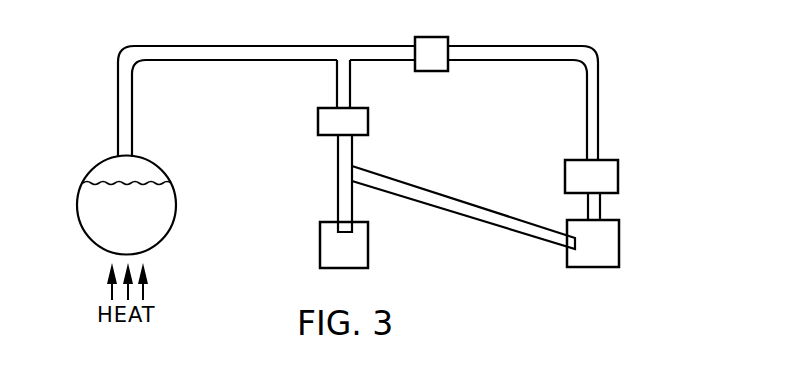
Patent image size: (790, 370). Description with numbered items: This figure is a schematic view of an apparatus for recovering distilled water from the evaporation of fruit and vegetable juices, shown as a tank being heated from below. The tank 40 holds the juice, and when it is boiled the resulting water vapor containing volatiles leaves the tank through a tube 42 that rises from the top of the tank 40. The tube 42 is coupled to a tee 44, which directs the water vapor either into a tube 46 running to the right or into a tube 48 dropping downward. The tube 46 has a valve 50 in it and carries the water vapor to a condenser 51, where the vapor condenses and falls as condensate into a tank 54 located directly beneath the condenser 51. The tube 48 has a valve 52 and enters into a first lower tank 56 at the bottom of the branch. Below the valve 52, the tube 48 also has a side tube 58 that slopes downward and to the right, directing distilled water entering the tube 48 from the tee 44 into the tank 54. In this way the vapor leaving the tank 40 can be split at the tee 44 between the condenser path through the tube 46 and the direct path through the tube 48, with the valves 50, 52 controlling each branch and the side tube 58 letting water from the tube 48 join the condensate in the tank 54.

The tank 40 is at (173, 228).
The tube 42 is at (136, 106).
The tee 44 is at (341, 52).
The tube 46 is at (494, 46).
The tube 48 is at (333, 190).
The valve 50 is at (434, 40).
The condenser 51 is at (622, 170).
The valve 52 is at (372, 120).
The tank 54 is at (623, 237).
The first lower tank 56 is at (373, 245).
The side tube 58 is at (424, 186).